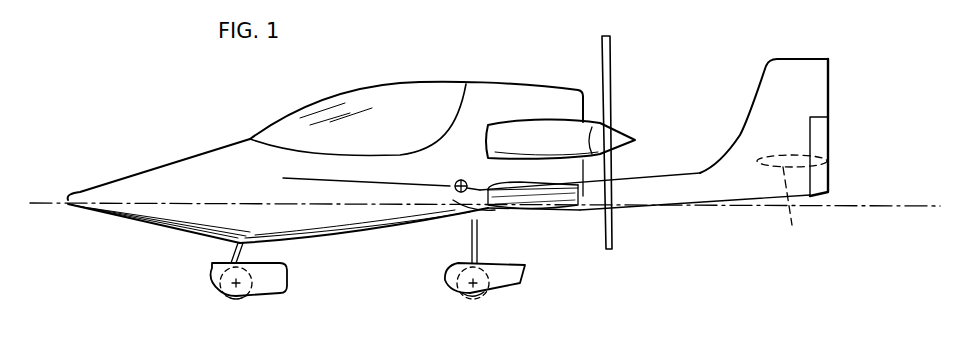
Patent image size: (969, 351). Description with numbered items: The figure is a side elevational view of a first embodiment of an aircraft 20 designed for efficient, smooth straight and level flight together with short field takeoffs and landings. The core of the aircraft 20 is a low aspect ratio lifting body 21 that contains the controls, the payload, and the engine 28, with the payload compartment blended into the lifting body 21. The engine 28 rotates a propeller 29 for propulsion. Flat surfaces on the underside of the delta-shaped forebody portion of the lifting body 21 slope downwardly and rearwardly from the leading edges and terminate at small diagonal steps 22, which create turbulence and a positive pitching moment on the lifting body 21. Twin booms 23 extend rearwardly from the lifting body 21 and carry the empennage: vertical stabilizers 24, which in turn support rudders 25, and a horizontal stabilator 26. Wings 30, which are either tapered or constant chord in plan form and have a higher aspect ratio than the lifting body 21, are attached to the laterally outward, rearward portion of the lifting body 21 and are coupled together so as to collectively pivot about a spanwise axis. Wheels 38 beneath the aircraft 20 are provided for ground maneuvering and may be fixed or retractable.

The aircraft 20 is at (160, 88).
The lifting body 21 is at (243, 186).
The diagonal steps 22 is at (360, 243).
The booms 23 is at (688, 208).
The vertical stabilizers 24 is at (802, 100).
The rudders 25 is at (823, 132).
The horizontal stabilator 26 is at (792, 205).
The engine 28 is at (537, 133).
The propeller 29 is at (612, 62).
The wings 30 is at (545, 212).
The wheels 38 is at (233, 298).